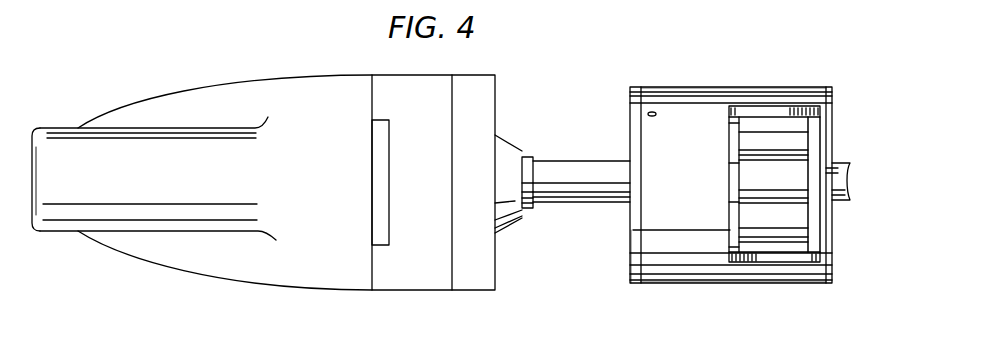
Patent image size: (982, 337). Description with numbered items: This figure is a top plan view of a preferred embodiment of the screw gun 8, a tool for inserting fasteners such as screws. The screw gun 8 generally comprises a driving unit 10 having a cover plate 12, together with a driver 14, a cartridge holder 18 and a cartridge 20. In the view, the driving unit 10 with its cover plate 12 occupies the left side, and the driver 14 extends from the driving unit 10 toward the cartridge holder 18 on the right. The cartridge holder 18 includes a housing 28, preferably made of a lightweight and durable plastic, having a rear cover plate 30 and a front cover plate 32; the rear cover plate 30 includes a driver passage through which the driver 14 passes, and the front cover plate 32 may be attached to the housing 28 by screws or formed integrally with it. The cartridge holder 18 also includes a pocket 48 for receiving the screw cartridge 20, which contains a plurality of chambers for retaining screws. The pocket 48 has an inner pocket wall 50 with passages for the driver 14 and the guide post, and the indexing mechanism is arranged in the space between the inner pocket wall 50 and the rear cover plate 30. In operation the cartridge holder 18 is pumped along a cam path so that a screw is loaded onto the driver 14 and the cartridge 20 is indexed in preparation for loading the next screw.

The screw gun 8 is at (217, 77).
The driving unit 10 is at (150, 97).
The cover plate 12 is at (470, 292).
The driver 14 is at (567, 161).
The cartridge holder 18 is at (671, 70).
The cartridge 20 is at (820, 122).
The housing 28 is at (776, 95).
The rear cover plate 30 is at (627, 248).
The front cover plate 32 is at (830, 262).
The pocket 48 is at (817, 148).
The inner pocket wall 50 is at (728, 133).